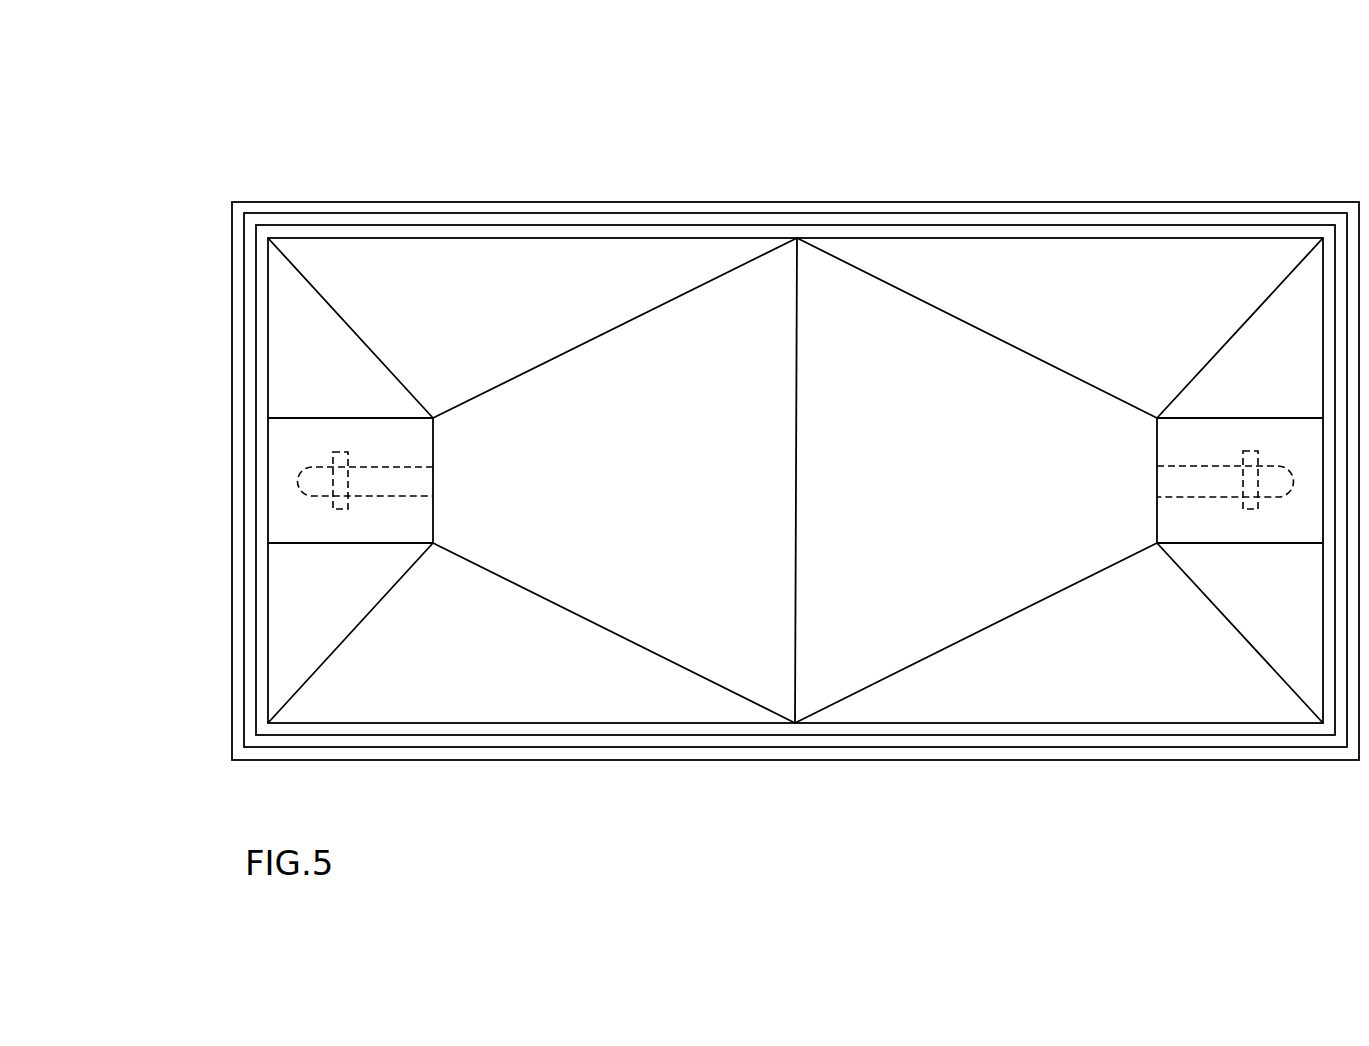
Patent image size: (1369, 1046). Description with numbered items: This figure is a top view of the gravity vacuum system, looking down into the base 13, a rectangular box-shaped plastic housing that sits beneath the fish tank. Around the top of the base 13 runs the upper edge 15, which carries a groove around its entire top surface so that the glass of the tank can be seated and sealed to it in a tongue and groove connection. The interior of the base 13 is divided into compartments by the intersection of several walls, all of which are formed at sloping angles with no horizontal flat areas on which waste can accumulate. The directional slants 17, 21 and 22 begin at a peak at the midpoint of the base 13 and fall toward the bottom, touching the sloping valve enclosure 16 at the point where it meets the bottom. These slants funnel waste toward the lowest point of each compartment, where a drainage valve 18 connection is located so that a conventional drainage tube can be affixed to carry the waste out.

The base 13 is at (309, 200).
The upper edge 15 is at (704, 220).
The sloping valve enclosure 16 is at (395, 440).
The directional slant 17 is at (897, 348).
The drainage valve 18 is at (395, 484).
The directional slant 21 is at (1152, 282).
The directional slant 22 is at (1255, 598).